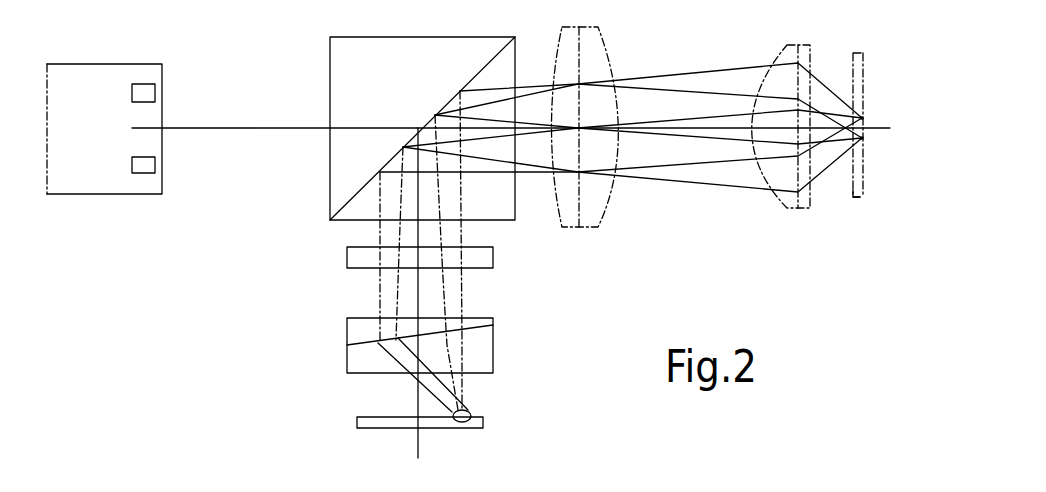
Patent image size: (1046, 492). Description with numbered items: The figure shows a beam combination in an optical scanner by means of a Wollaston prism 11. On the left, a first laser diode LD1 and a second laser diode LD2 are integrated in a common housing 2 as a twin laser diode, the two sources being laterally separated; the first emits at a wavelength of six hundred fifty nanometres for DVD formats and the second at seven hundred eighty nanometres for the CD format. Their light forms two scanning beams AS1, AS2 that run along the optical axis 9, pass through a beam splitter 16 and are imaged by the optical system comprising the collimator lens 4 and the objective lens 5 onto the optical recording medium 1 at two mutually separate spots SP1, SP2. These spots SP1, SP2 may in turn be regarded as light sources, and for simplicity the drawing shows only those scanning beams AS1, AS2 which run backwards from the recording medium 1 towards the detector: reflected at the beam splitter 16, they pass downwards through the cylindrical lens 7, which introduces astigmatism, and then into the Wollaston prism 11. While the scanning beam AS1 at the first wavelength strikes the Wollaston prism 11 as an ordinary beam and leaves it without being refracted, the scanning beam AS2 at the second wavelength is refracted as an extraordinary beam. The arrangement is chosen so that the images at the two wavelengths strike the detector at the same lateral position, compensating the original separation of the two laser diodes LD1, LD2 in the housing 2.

The optical recording medium 1 is at (862, 198).
The common housing 2 is at (73, 195).
The first laser diode LD1 is at (130, 173).
The second laser diode LD2 is at (131, 97).
The collimator lens 4 is at (592, 212).
The objective lens 5 is at (793, 198).
The cylindrical lens 7 is at (352, 262).
The optical axis 9 is at (227, 128).
The Wollaston prism 11 is at (342, 355).
The beam splitter 16 is at (345, 70).
The first scanning beam AS1 is at (727, 178).
The second scanning beam AS2 is at (727, 77).
The first spot SP1 is at (862, 139).
The second spot SP2 is at (862, 118).